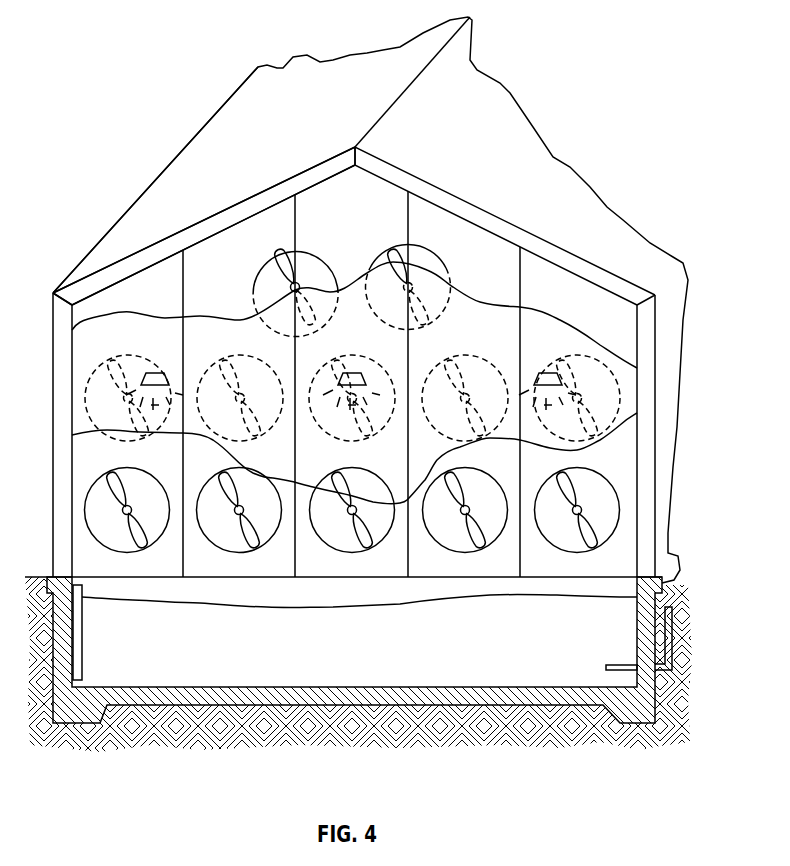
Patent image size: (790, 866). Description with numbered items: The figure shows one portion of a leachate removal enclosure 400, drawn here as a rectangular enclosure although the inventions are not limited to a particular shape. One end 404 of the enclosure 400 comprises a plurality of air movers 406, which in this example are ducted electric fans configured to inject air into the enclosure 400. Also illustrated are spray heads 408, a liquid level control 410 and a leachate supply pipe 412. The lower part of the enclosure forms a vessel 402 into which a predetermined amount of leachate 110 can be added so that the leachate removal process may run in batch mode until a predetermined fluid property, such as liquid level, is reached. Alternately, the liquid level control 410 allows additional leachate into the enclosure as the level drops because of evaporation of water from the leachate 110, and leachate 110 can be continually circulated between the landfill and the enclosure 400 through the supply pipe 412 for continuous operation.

The leachate removal enclosure 400 is at (520, 157).
The vessel 402 is at (317, 697).
The end of the enclosure 404 is at (78, 291).
The air movers 406 is at (265, 287).
The spray heads 408 is at (152, 372).
The liquid level control 410 is at (82, 645).
The leachate supply pipe 412 is at (622, 663).
The leachate 110 is at (370, 660).